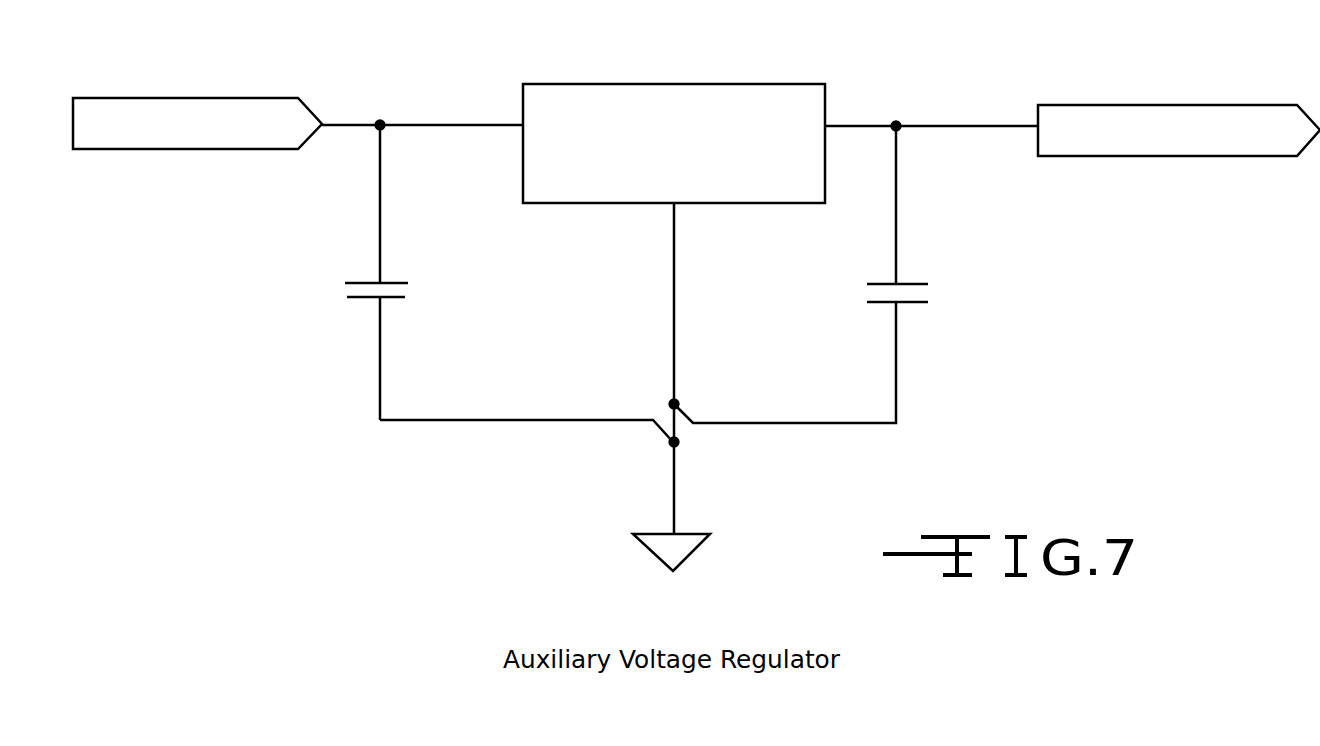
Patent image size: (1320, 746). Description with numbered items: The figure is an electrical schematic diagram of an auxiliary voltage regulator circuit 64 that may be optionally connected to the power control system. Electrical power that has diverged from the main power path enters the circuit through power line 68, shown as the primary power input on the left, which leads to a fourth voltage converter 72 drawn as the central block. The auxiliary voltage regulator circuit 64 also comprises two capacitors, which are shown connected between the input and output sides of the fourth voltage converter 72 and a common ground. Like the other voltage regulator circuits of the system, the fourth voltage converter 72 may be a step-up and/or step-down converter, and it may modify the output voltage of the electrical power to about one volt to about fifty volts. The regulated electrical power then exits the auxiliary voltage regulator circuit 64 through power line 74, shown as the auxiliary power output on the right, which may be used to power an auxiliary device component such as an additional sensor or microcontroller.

The auxiliary voltage regulator circuit 64 is at (1088, 281).
The power line 68 is at (344, 123).
The fourth voltage converter 72 is at (541, 110).
The power line 74 is at (948, 126).